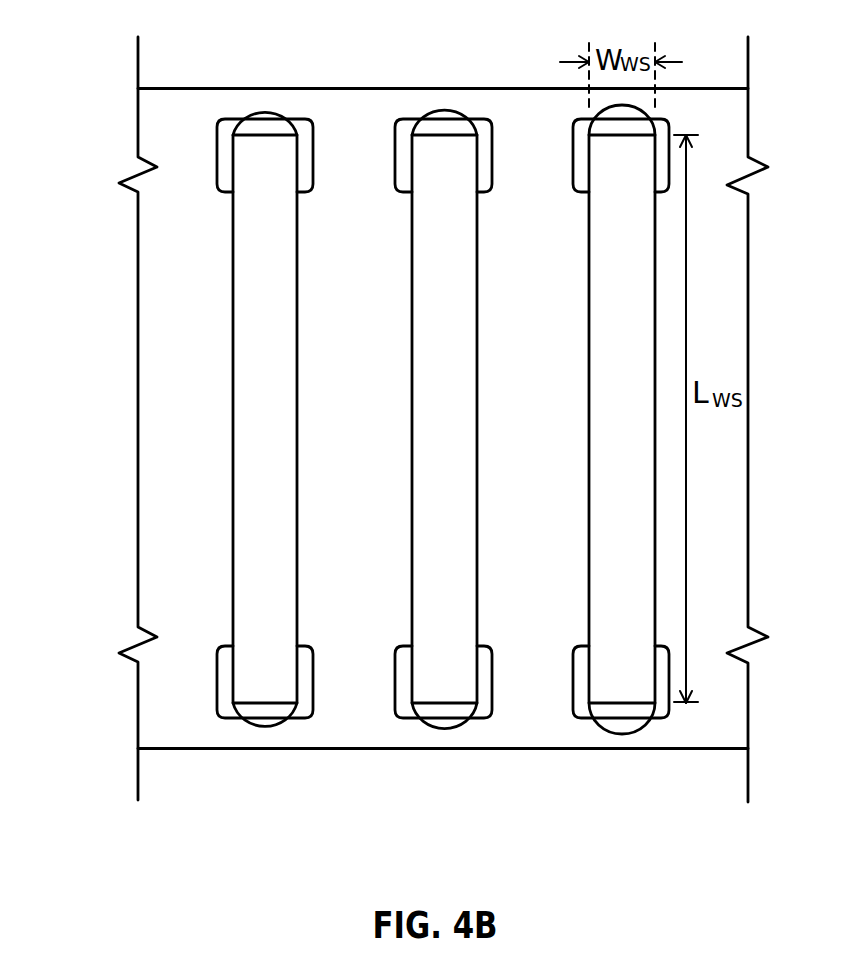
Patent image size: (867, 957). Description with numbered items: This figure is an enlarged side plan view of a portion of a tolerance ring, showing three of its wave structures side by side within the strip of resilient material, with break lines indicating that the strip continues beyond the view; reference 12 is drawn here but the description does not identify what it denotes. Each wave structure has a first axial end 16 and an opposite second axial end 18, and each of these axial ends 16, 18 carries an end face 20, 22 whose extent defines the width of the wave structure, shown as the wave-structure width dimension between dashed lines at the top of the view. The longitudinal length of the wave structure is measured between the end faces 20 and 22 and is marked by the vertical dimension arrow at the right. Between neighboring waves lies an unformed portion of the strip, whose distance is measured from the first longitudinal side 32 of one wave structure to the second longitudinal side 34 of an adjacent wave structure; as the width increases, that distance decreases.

The substrate 12 is at (645, 718).
The first axial end 16 is at (455, 133).
The second axial end 18 is at (458, 705).
The end face 20 is at (259, 148).
The end face 22 is at (260, 690).
The first longitudinal side 32 is at (233, 326).
The second longitudinal side 34 is at (298, 325).